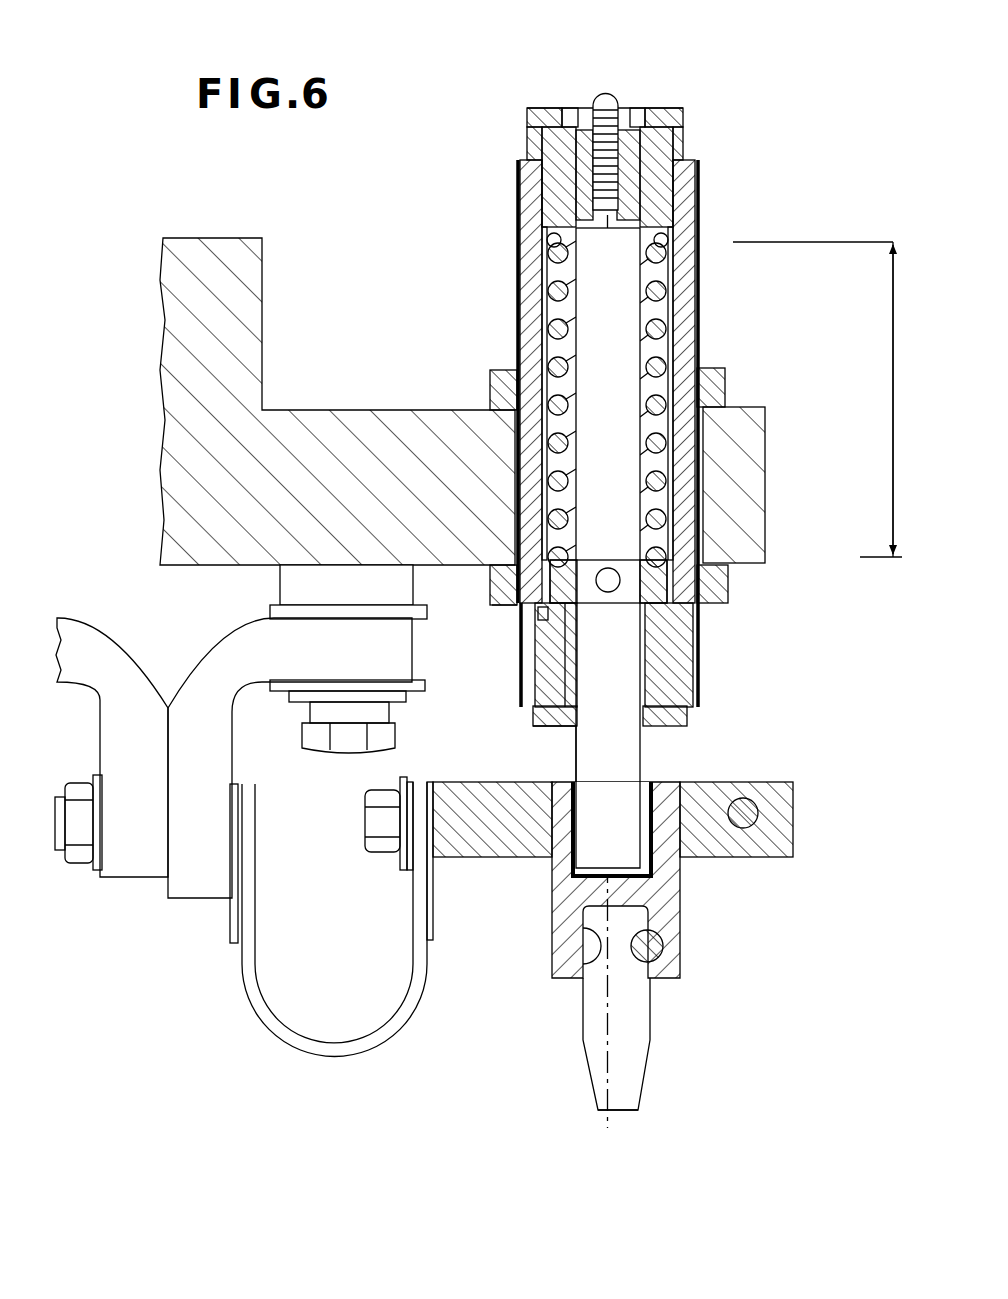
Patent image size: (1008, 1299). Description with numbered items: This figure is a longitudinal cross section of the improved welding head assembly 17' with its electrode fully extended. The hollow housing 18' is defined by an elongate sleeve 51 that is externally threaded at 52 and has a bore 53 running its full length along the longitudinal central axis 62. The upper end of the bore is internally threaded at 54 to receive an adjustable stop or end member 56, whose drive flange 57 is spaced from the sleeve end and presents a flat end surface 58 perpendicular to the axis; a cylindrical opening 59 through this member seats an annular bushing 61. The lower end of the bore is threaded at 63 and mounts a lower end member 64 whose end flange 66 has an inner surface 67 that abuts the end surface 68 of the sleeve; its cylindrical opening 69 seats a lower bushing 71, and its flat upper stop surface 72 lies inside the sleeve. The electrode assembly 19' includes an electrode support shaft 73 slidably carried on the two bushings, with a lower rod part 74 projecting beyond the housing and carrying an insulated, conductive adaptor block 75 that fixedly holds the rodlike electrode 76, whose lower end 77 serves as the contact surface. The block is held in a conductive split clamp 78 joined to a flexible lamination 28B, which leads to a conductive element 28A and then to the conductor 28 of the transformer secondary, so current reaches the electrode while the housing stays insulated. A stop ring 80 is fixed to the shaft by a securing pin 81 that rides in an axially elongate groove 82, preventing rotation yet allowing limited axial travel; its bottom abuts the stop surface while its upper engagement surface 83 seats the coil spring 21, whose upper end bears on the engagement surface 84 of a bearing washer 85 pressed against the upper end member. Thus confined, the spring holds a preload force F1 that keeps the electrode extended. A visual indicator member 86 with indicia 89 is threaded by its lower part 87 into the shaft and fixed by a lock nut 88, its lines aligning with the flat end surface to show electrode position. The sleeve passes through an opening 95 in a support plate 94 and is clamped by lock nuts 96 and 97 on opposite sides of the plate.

The welding head assembly 17' is at (367, 261).
The hollow housing 18' is at (752, 230).
The electrode assembly 19' is at (691, 763).
The spring 21 is at (695, 300).
The conductor 28 is at (100, 690).
The conductive element 28A is at (225, 705).
The flexible electrically-conductive lamination 28B is at (250, 1005).
The sleeve 51 is at (685, 328).
The external threads 52 is at (530, 320).
The bore 53 is at (560, 290).
The internal threads 54 is at (673, 165).
The adjustable stop or end member 56 is at (670, 140).
The drive flange 57 is at (683, 110).
The flat end surface 58 is at (540, 108).
The cylindrical opening 59 is at (640, 108).
The annular bushing 61 is at (565, 180).
The longitudinal central axis 62 is at (652, 858).
The lower internal threads 63 is at (692, 650).
The lower stop or end member 64 is at (545, 712).
The end flange 66 is at (690, 722).
The inner surface 67 is at (535, 727).
The end surface 68 is at (700, 707).
The cylindrical opening 69 is at (566, 745).
The lower bushing 71 is at (700, 642).
The upper stop surface 72 is at (715, 592).
The electrode support shaft 73 is at (595, 345).
The lower rod part 74 is at (560, 840).
The adaptor block 75 is at (680, 900).
The electrode 76 is at (650, 1012).
The lower end 77 is at (622, 1122).
The split clamp 78 is at (483, 832).
The stop ring 80 is at (555, 603).
The securing pin 81 is at (540, 612).
The axially elongate groove 82 is at (548, 660).
The engagement surface 83 is at (735, 560).
The further engagement surface 84 is at (550, 255).
The bearing washer 85 is at (548, 238).
The visual indicator member 86 is at (578, 108).
The threaded lower part 87 is at (542, 160).
The lock nut 88 is at (527, 132).
The visual indicia 89 is at (618, 100).
The support plate 94 is at (283, 512).
The opening 95 is at (520, 545).
The lock nut 96 is at (492, 385).
The lock nut 97 is at (500, 578).
The preload force F1 is at (817, 399).